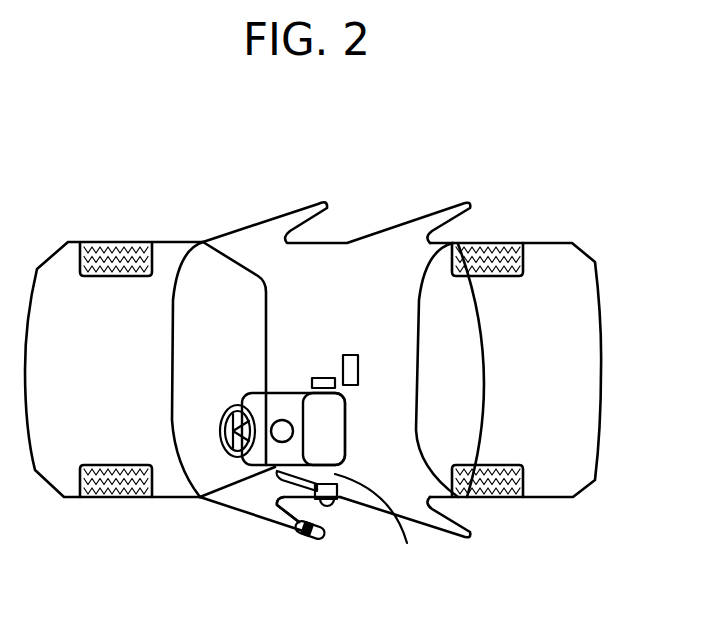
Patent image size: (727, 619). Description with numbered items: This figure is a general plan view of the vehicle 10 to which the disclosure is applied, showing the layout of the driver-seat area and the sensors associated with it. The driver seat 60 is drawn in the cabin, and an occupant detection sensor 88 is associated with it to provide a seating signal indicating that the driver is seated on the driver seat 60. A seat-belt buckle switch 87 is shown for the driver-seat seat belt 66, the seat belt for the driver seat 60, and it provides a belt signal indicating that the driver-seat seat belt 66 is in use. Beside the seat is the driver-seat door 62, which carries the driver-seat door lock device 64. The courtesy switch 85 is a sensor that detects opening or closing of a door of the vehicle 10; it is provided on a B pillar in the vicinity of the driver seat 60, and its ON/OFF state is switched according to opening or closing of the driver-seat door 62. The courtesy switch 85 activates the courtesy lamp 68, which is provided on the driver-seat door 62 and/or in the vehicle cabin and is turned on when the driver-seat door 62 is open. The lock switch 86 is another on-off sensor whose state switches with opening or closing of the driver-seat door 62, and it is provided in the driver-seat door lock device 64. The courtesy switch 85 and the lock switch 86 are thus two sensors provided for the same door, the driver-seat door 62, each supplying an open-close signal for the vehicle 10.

The vehicle 10 is at (368, 128).
The driver seat 60 is at (292, 362).
The driver-seat door 62 is at (273, 522).
The driver-seat door lock device 64 is at (298, 532).
The driver-seat seat belt 66 is at (379, 523).
The courtesy lamp 68 is at (347, 368).
The courtesy switch 85 is at (327, 503).
The lock switch 86 is at (323, 523).
The seat-belt buckle switch 87 is at (318, 378).
The occupant detection sensor 88 is at (282, 432).